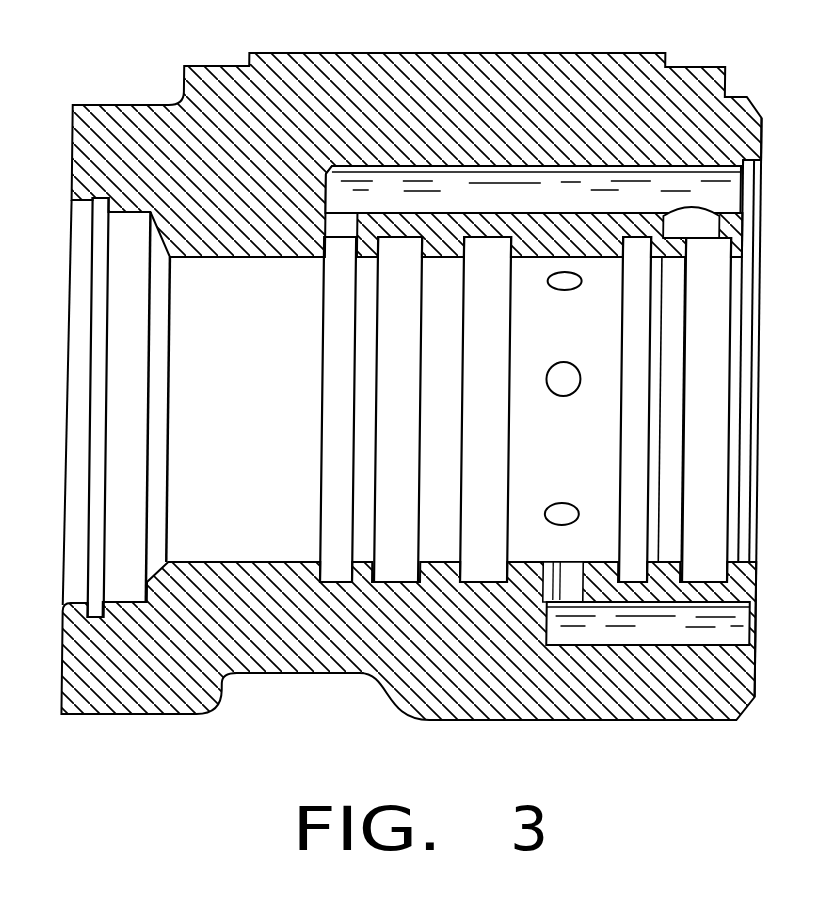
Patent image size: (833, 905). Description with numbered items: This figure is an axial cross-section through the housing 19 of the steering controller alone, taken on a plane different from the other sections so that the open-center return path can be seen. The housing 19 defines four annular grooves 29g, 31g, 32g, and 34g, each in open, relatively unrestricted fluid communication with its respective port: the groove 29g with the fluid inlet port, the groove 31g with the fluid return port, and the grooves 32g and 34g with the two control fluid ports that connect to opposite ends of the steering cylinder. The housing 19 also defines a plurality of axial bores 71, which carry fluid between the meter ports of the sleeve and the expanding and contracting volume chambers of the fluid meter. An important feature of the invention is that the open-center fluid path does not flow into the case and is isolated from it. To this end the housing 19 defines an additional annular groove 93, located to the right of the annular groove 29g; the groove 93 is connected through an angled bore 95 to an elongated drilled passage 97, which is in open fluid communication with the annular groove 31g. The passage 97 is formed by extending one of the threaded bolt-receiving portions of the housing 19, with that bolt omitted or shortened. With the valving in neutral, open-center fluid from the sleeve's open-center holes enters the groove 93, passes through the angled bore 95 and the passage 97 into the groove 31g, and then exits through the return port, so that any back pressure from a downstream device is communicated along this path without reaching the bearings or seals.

The housing 19 is at (180, 127).
The drilled passage 97 is at (502, 190).
The angled bore 95 is at (687, 223).
The annular groove 29g is at (630, 244).
The annular groove 93 is at (727, 243).
The annular groove 31g is at (323, 238).
The annular groove 34g is at (403, 583).
The annular groove 32g is at (487, 585).
The axial bores 71 is at (668, 628).